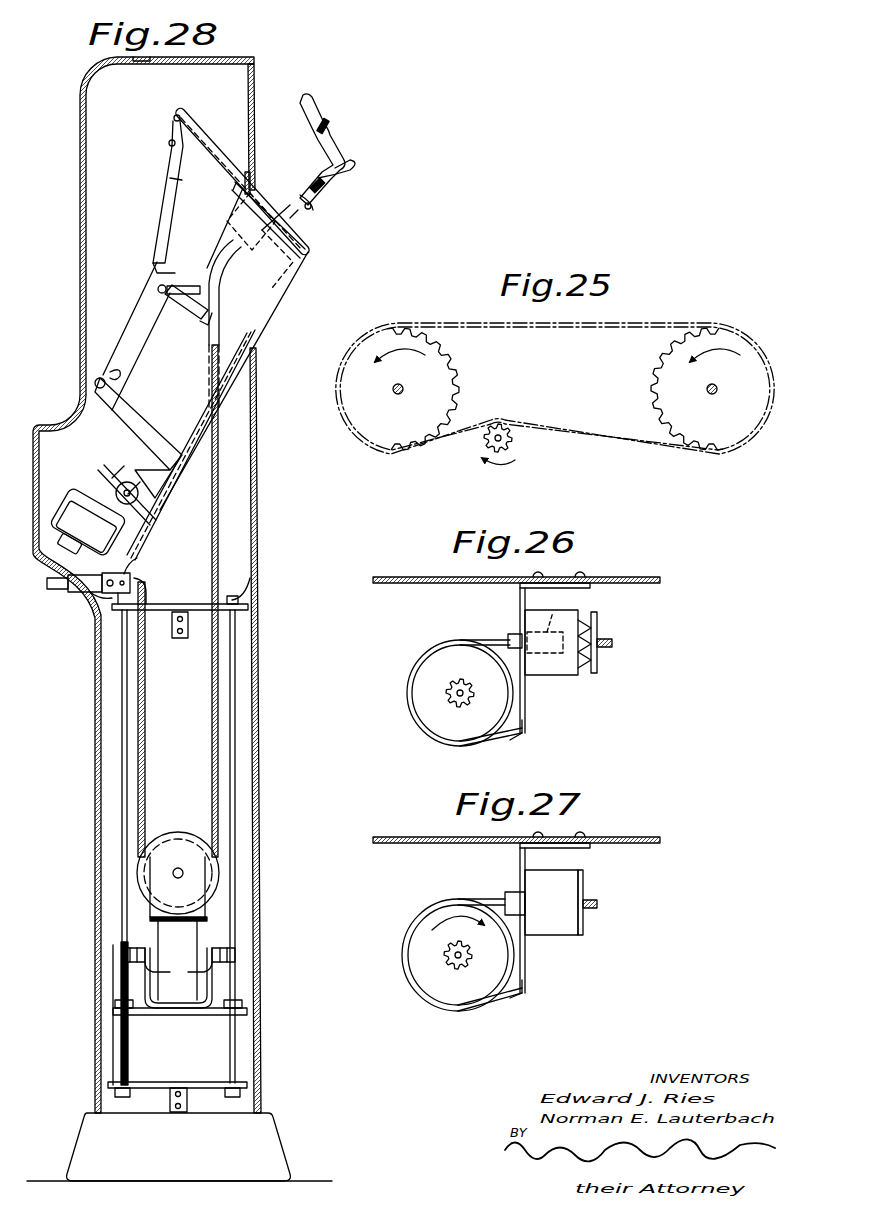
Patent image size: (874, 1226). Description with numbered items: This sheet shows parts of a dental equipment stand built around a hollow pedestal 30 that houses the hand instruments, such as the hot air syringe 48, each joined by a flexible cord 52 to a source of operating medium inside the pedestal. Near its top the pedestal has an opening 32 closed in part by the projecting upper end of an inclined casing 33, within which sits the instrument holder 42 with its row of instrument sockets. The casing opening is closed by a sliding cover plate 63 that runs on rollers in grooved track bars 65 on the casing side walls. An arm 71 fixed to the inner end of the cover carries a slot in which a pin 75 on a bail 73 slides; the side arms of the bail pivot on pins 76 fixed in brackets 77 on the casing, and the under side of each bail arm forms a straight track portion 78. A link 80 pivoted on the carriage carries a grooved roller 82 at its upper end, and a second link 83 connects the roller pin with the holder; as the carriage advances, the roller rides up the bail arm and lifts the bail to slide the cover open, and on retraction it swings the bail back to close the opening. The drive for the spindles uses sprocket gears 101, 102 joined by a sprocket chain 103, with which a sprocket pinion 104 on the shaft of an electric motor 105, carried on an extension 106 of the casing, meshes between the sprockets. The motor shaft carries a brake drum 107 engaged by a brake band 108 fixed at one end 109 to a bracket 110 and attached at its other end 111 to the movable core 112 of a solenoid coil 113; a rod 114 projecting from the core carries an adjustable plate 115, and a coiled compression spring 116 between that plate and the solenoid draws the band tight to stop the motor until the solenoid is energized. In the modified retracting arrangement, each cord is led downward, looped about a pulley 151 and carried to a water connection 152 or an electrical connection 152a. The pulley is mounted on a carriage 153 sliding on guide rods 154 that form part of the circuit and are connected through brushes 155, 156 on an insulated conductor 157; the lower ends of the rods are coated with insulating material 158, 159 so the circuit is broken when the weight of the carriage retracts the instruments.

In FIG. 28, the hollow support or pedestal 30 is at (262, 1060).
In FIG. 28, the opening 32 is at (252, 188).
In FIG. 28, the casing 33 is at (272, 320).
In FIG. 28, the instrument holder 42 is at (266, 250).
In FIG. 28, the hot air syringe 48 is at (333, 141).
In FIG. 28, the flexible conducting element or cord 52 is at (218, 542).
In FIG. 28, the cover plate 63 is at (210, 145).
In FIG. 28, the track bars 65 is at (226, 163).
In FIG. 28, the arm 71 is at (174, 121).
In FIG. 28, the bail 73 is at (162, 238).
In FIG. 28, the pin 75 is at (168, 144).
In FIG. 28, the pins 76 is at (100, 378).
In FIG. 28, the brackets 77 is at (115, 400).
In FIG. 28, the straight track portion 78 is at (172, 284).
In FIG. 28, the link 80 is at (180, 302).
In FIG. 28, the grooved roller 82 is at (157, 286).
In FIG. 28, the link 83 is at (205, 262).
In FIG. 25, the sprocket gear 101 is at (720, 445).
In FIG. 25, the sprocket gear 102 is at (386, 443).
In FIG. 28, the sprocket chain 103 is at (118, 470).
In FIG. 25, the sprocket chain 103 is at (644, 325).
In FIG. 25, the sprocket pinion 104 is at (512, 448).
In FIG. 26, the sprocket pinion 104 is at (478, 673).
In FIG. 27, the sprocket pinion 104 is at (470, 954).
In FIG. 28, the electric motor 105 is at (70, 497).
In FIG. 28, the extension of the casing 106 is at (132, 520).
In FIG. 26, the extension of the casing 106 is at (650, 576).
In FIG. 27, the extension of the casing 106 is at (643, 836).
In FIG. 26, the brake drum 107 is at (414, 676).
In FIG. 27, the brake drum 107 is at (416, 918).
In FIG. 26, the brake band 108 is at (410, 703).
In FIG. 27, the brake band 108 is at (404, 937).
In FIG. 26, the fixed end of brake band 109 is at (522, 737).
In FIG. 27, the fixed end of brake band 109 is at (522, 996).
In FIG. 26, the bracket 110 is at (520, 596).
In FIG. 27, the bracket 110 is at (520, 857).
In FIG. 26, the attachment of brake band to core 111 is at (508, 638).
In FIG. 27, the attachment of brake band to core 111 is at (505, 896).
In FIG. 26, the movable core 112 is at (553, 612).
In FIG. 26, the solenoid coil 113 is at (563, 675).
In FIG. 27, the solenoid coil 113 is at (552, 877).
In FIG. 26, the projecting rod 114 is at (612, 644).
In FIG. 27, the projecting rod 114 is at (597, 903).
In FIG. 26, the plate 115 is at (598, 622).
In FIG. 27, the plate 115 is at (585, 884).
In FIG. 26, the coiled compression spring 116 is at (588, 622).
In FIG. 28, the pulley 151 is at (190, 885).
In FIG. 28, the water connection 152 is at (135, 572).
In FIG. 28, the electrical connection 152a is at (95, 599).
In FIG. 28, the carriage 153 is at (190, 940).
In FIG. 28, the guide rods 154 is at (122, 920).
In FIG. 28, the brush 155 is at (225, 963).
In FIG. 28, the brush 156 is at (150, 968).
In FIG. 28, the insulated conductor 157 is at (207, 985).
In FIG. 28, the insulating coating 158 is at (240, 1003).
In FIG. 28, the insulating coating 159 is at (118, 992).